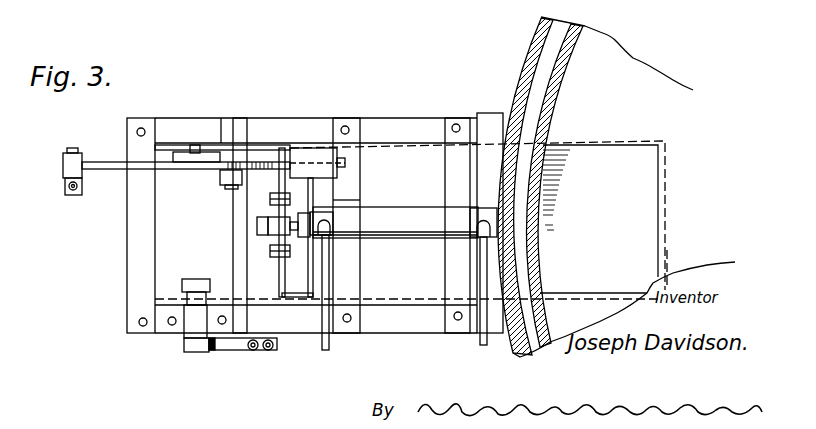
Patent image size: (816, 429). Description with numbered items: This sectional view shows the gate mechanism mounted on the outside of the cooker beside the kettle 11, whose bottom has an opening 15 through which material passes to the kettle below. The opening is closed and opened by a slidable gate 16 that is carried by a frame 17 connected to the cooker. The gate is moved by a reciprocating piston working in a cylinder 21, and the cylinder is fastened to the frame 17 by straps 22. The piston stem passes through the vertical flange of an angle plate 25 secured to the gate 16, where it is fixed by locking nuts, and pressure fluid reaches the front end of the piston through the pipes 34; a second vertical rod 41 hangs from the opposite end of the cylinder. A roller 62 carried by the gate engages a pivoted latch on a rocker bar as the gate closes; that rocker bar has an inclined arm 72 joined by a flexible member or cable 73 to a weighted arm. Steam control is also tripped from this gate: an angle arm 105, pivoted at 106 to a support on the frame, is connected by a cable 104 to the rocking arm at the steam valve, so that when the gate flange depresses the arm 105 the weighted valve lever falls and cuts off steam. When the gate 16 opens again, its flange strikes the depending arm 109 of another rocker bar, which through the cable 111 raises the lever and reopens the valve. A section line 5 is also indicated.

The center line / bolt 5 is at (257, 223).
The kettle 11 is at (523, 73).
The opening 15 is at (662, 180).
The slidable gate 16 is at (420, 285).
The frame 17 is at (173, 126).
The cylinder 21 is at (405, 232).
The straps 22 is at (444, 134).
The angle plate 25 is at (279, 268).
The pipes 34 is at (325, 340).
The vertical rod 41 is at (483, 320).
The roller 62 is at (292, 148).
The inclined arm 72 is at (100, 167).
The flexible member or cable 73 is at (65, 190).
The cable 104 is at (268, 352).
The angle arm 105 is at (228, 344).
The pivot 106 is at (185, 343).
The depending arm 109 is at (209, 263).
The cable 111 is at (250, 352).